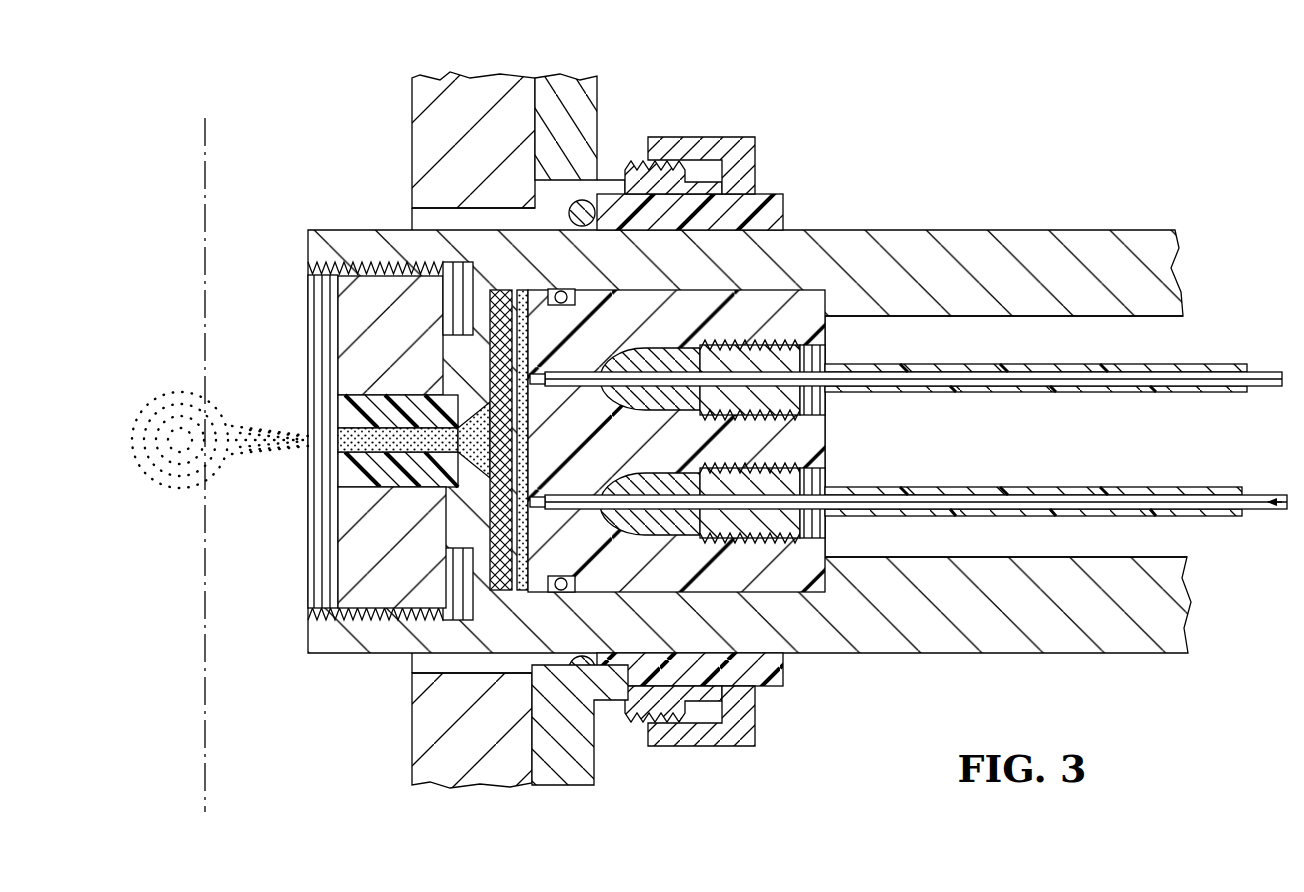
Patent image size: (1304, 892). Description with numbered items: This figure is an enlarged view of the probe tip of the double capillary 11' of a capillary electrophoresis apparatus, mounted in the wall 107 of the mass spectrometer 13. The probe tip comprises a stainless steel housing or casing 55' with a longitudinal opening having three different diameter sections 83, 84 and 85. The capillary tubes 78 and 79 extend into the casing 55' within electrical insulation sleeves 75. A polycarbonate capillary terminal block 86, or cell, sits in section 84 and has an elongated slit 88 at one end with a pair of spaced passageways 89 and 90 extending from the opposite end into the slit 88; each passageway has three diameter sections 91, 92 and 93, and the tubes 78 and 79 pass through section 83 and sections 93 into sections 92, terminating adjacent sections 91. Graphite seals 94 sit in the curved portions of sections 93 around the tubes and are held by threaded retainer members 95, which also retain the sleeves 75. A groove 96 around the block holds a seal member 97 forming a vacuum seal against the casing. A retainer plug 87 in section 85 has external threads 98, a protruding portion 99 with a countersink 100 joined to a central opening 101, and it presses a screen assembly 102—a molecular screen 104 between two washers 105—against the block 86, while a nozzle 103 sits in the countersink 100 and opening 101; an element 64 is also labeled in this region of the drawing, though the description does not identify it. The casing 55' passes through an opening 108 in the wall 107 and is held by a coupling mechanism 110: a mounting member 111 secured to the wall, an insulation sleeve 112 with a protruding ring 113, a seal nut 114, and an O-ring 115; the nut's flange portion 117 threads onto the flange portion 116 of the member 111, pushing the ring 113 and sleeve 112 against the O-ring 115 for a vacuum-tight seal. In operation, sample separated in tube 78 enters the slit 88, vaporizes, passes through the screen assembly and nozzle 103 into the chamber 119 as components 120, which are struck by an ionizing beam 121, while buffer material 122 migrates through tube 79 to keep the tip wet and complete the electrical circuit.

The double capillary 11' is at (1157, 133).
The mass spectrometer 13 is at (376, 765).
The housing or casing 55' is at (749, 412).
The nozzle insert seal 64 is at (342, 384).
The electrical insulation sleeves 75 is at (1219, 478).
The capillary tube 78 is at (1241, 368).
The capillary tube 79 is at (1246, 495).
The opening section 83 is at (951, 317).
The opening section 84 is at (696, 290).
The opening section 85 is at (380, 608).
The capillary terminal block 86 is at (793, 580).
The retainer plug 87 is at (356, 568).
The elongated slit 88 is at (522, 395).
The passageway 89 is at (584, 364).
The passageway 90 is at (605, 509).
The passageway section 91 is at (540, 470).
The passageway section 92 is at (604, 385).
The passageway section 93 is at (645, 473).
The graphite seals 94 is at (656, 348).
The threaded retainer members 95 is at (820, 441).
The groove 96 is at (566, 288).
The seal member 97 is at (580, 302).
The external threads 98 is at (392, 276).
The protruding portion 99 is at (460, 526).
The countersink 100 is at (468, 374).
The centrally located opening 101 is at (394, 395).
The screen assembly 102 is at (493, 283).
The nozzle 103 is at (338, 470).
The molecular screen 104 is at (524, 290).
The spacers or washers 105 is at (600, 592).
The wall 107 is at (412, 150).
The opening 108 is at (412, 220).
The coupling mechanism 110 is at (698, 114).
The mounting member 111 is at (597, 96).
The electrical insulation sleeve 112 is at (783, 214).
The protruding ring 113 is at (708, 183).
The seal nut 114 is at (754, 150).
The O-ring 115 is at (573, 196).
The flange portion 116 is at (632, 702).
The flange portion 117 is at (706, 726).
The chamber 119 is at (282, 200).
The components of the sample material 120 is at (190, 514).
The ionizing beam 121 is at (212, 780).
The buffer material 122 is at (1290, 505).